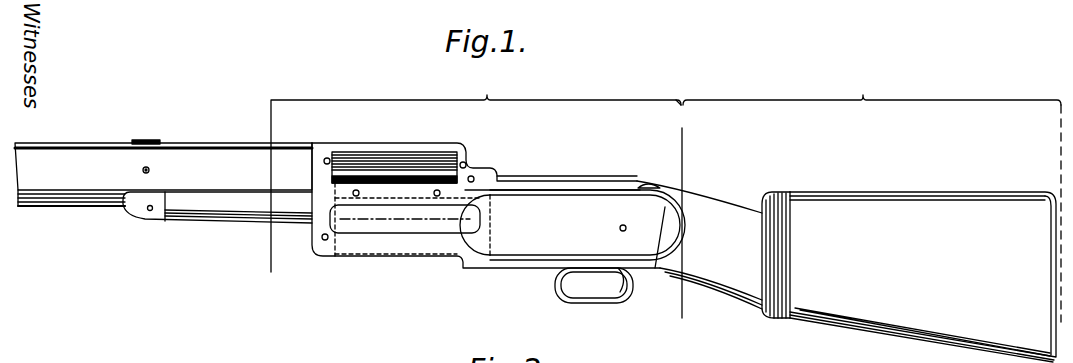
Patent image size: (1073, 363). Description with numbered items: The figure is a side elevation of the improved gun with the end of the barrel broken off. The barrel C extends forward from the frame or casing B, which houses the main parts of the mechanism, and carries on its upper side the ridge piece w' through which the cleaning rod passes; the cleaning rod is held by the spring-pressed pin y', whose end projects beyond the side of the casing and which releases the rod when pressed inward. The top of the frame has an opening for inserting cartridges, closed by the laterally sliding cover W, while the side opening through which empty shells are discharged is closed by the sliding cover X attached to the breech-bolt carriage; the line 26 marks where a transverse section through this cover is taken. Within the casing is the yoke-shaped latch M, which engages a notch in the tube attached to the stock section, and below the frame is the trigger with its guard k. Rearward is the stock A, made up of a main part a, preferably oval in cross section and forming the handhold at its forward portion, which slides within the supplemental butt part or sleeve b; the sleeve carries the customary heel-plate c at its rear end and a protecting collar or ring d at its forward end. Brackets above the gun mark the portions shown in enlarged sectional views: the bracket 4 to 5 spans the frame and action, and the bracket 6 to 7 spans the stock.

The bracket 4—5 (section boundary) 4 is at (476, 183).
The bracket 4—5 (section boundary) 5 is at (672, 110).
The bracket 6—7 (section boundary) 6 is at (871, 206).
The bracket 6—7 (section boundary) 7 is at (1051, 213).
The barrel C is at (163, 152).
The ridge piece w' is at (131, 165).
The spring-pressed pin y' is at (217, 191).
The frame or casing B is at (488, 205).
The laterally sliding cover W is at (375, 124).
The sliding cover X is at (390, 226).
The section line 26— 26 is at (512, 219).
The latch M is at (650, 185).
The trigger k is at (618, 289).
The stock A is at (900, 176).
The main part of stock a is at (699, 245).
The protecting collar or ring d is at (776, 255).
The supplemental butt part or sleeve b is at (923, 277).
The heel-plate c is at (1051, 266).